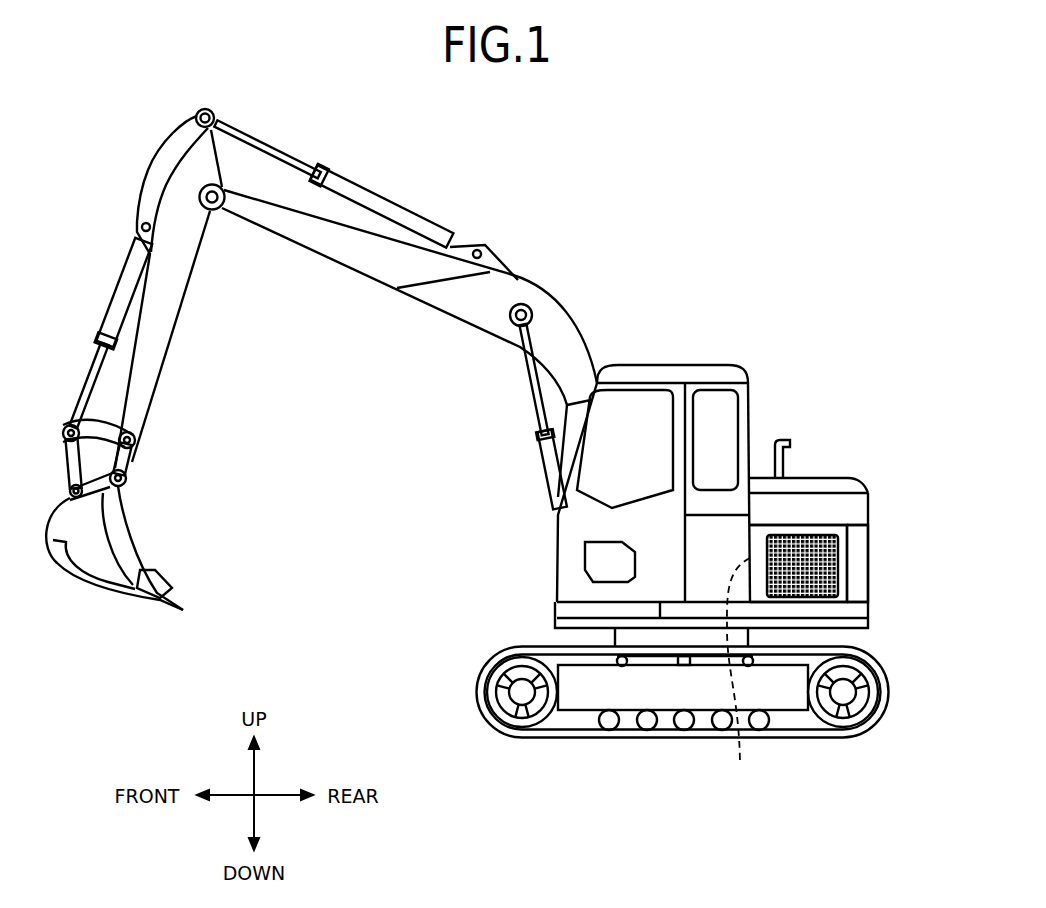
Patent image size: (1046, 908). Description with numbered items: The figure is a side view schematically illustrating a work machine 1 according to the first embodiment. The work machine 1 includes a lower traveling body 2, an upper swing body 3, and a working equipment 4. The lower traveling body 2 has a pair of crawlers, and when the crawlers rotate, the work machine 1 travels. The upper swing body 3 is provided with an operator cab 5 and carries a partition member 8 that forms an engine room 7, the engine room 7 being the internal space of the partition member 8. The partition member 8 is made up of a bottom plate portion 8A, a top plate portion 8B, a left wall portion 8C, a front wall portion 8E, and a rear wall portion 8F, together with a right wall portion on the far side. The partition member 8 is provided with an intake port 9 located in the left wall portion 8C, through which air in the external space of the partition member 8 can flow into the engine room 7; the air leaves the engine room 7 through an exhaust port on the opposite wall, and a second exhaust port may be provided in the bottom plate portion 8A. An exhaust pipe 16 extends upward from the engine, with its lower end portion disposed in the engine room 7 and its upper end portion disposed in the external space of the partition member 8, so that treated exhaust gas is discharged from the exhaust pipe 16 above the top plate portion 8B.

The work machine 1 is at (819, 180).
The lower traveling body 2 is at (896, 692).
The upper swing body 3 is at (793, 408).
The working equipment 4 is at (431, 181).
The operator cab 5 is at (638, 414).
The engine room 7 is at (825, 472).
The partition member 8 is at (871, 483).
The bottom plate portion 8A is at (870, 618).
The top plate portion 8B is at (853, 478).
The left wall portion 8C is at (860, 537).
The front wall portion 8E is at (737, 676).
The rear wall portion 8F is at (870, 583).
The intake port 9 is at (841, 562).
The exhaust pipe 16 is at (780, 440).